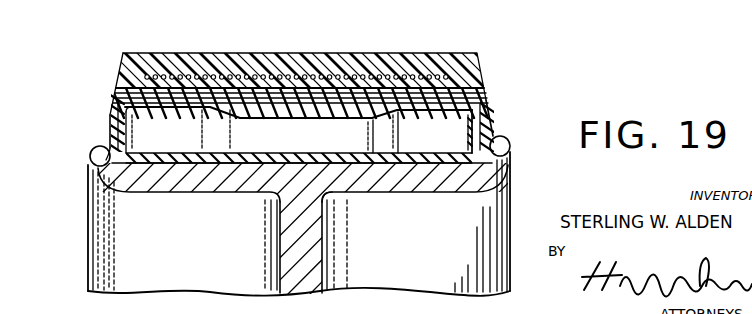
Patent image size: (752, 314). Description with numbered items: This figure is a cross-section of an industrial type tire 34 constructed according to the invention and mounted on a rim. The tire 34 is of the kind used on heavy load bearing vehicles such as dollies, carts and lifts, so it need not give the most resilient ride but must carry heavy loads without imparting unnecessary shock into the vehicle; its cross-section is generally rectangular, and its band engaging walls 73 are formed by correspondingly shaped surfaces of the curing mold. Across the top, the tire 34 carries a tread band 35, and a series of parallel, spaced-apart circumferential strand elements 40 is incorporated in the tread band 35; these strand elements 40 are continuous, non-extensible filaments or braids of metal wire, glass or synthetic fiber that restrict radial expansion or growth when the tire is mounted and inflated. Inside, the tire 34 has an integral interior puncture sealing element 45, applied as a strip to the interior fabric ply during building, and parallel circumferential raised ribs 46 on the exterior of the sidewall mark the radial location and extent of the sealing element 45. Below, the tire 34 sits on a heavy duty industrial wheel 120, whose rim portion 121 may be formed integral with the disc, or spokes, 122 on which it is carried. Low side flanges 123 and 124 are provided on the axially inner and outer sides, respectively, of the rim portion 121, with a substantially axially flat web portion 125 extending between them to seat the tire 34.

The tire 34 is at (108, 119).
The tread band 35 is at (238, 52).
The strand elements 40 is at (263, 77).
The sealing element 45 is at (467, 127).
The raised ribs 46 is at (497, 120).
The band engaging walls 73 is at (153, 74).
The wheel 120 is at (88, 252).
The rim portion 121 is at (205, 188).
The disc, or spokes 122 is at (287, 246).
The side flange 123 is at (94, 157).
The side flange 124 is at (509, 155).
The web portion 125 is at (360, 183).